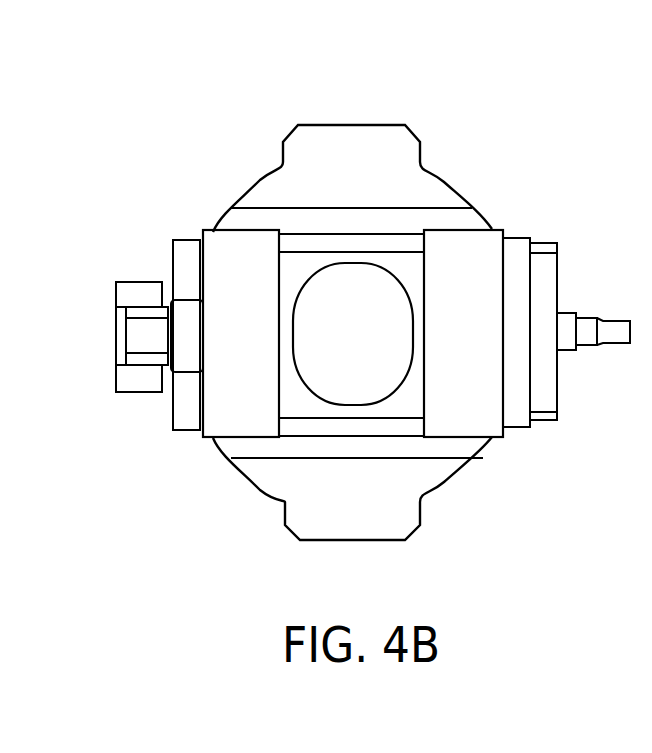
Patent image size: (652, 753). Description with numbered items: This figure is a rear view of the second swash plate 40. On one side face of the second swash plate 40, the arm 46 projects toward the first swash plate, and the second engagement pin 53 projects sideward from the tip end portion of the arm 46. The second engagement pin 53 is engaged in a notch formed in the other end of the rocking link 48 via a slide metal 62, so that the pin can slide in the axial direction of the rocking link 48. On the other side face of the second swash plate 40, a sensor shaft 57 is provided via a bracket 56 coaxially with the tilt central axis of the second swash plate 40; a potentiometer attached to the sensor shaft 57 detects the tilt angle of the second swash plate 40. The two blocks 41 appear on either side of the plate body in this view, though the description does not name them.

The second swash plate 40 is at (427, 129).
The bearing block 41 is at (232, 412).
The arm 46 is at (193, 360).
The rocking link 48 is at (137, 285).
The second engagement pin 53 is at (130, 338).
The bracket 56 is at (547, 422).
The sensor shaft 57 is at (618, 345).
The slide metal 62 is at (140, 360).